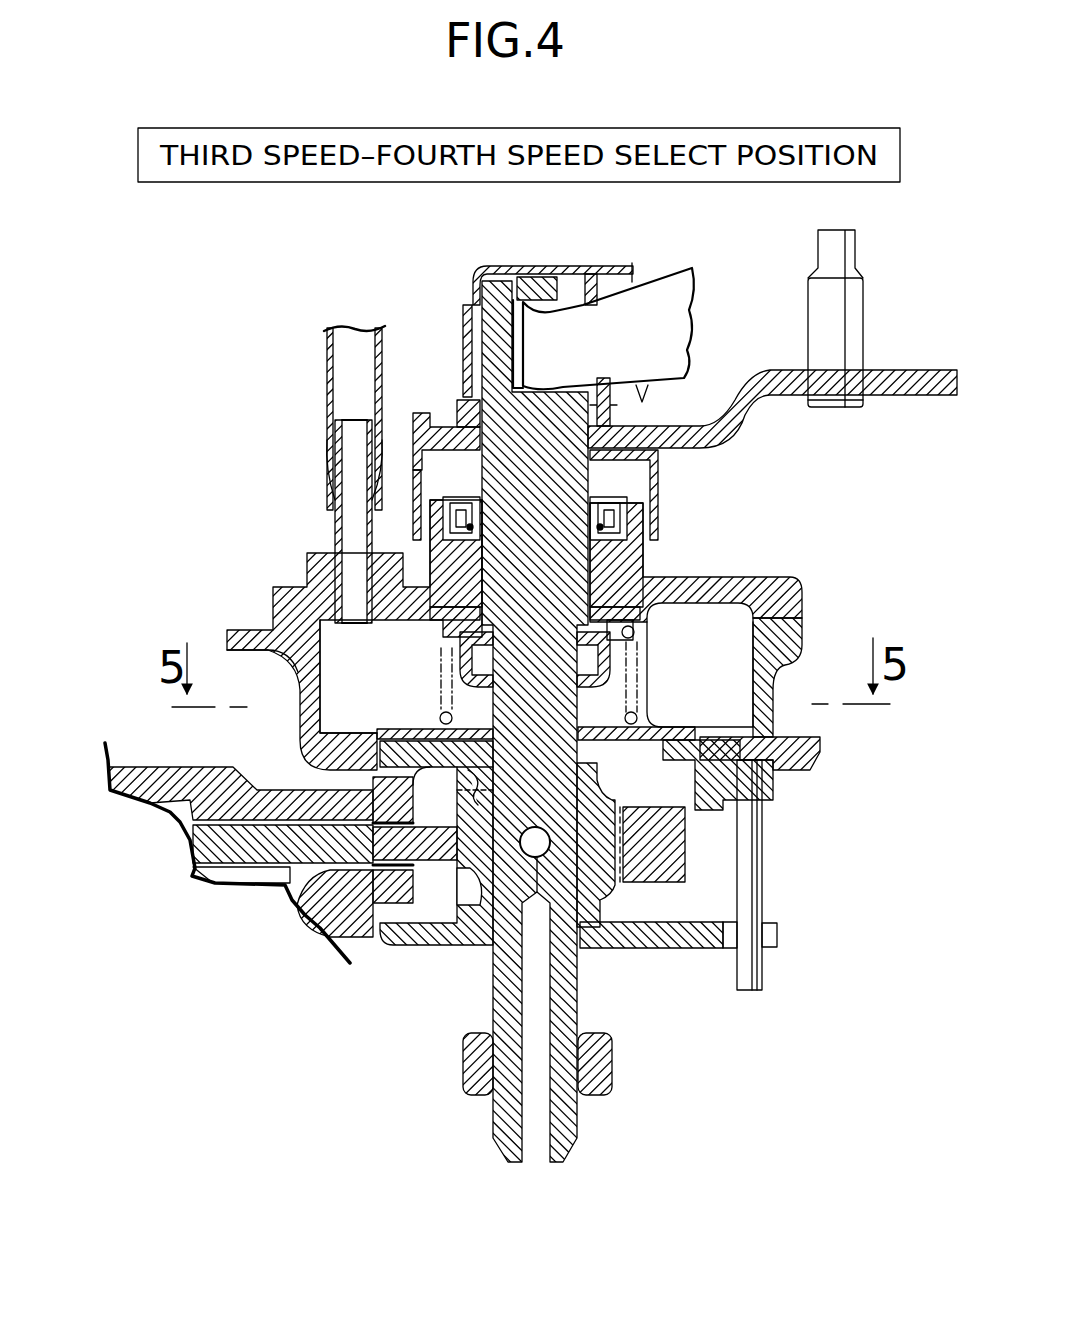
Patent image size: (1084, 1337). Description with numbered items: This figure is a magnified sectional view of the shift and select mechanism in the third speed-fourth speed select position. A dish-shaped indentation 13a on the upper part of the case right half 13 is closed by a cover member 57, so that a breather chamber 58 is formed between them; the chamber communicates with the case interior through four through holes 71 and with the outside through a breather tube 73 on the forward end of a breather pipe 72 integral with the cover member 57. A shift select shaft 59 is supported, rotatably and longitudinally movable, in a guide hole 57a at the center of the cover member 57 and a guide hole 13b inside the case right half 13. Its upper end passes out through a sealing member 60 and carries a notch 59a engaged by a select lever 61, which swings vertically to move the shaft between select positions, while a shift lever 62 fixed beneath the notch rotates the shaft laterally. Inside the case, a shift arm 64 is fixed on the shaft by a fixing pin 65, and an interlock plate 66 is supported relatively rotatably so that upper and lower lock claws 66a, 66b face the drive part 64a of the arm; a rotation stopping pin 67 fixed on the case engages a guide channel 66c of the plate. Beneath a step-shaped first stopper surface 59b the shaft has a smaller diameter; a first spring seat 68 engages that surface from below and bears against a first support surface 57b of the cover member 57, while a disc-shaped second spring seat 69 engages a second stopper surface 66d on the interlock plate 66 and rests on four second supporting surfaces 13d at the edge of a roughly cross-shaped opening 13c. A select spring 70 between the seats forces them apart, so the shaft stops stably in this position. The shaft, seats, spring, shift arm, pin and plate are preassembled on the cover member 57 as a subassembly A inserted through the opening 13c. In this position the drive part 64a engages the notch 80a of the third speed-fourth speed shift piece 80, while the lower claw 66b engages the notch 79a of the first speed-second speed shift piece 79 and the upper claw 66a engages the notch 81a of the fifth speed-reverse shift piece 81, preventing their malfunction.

The case right half 13 is at (248, 622).
The dish-shaped indentation 13a is at (330, 640).
The guide hole 13b is at (510, 1078).
The opening 13c is at (660, 800).
The second supporting surfaces 13d is at (672, 727).
The cover member 57 is at (742, 570).
The guide hole 57a is at (483, 613).
The first support surface 57b is at (640, 603).
The breather chamber 58 is at (418, 649).
The shift select shaft 59 is at (482, 1003).
The notch 59a is at (516, 266).
The first stopper surface 59b is at (500, 702).
The sealing member 60 is at (610, 500).
The select lever 61 is at (658, 293).
The shift lever 62 is at (768, 370).
The shift arm 64 is at (696, 851).
The drive part 64a is at (463, 925).
The fixing pin 65 is at (577, 960).
The interlock plate 66 is at (668, 954).
The upper lock claw 66a is at (490, 793).
The lower lock claw 66b is at (362, 896).
The guide channel 66c is at (778, 932).
The second stopper surface 66d is at (494, 710).
The rotation stopping pin 67 is at (748, 982).
The first spring seat 68 is at (640, 628).
The second spring seat 69 is at (410, 730).
The select spring 70 is at (753, 622).
The through holes 71 is at (377, 733).
The breather pipe 72 is at (322, 550).
The breather tube 73 is at (328, 430).
The first speed-second speed shift piece 79 is at (303, 924).
The notch 79a is at (387, 887).
The third speed-fourth speed shift piece 80 is at (217, 872).
The notch 80a is at (367, 843).
The fifth speed-reverse shift piece 81 is at (160, 818).
The notch 81a is at (367, 787).
The subassembly A is at (636, 688).